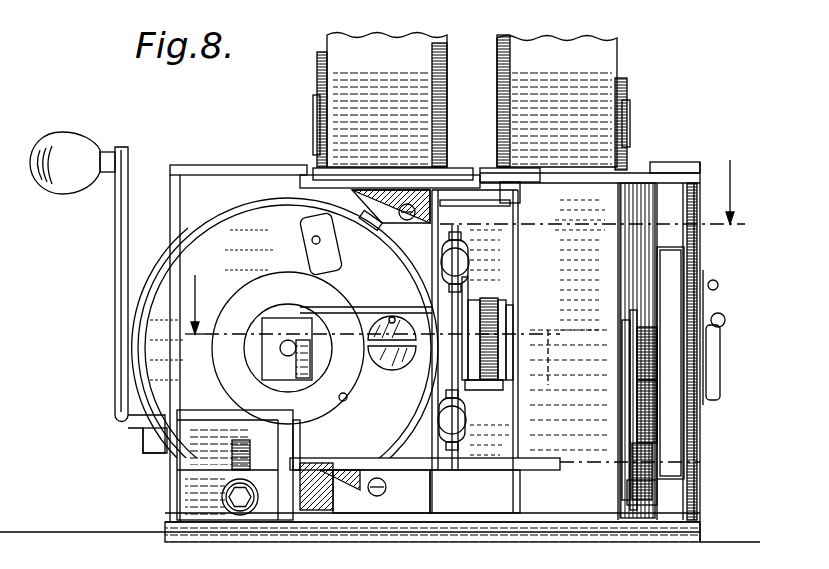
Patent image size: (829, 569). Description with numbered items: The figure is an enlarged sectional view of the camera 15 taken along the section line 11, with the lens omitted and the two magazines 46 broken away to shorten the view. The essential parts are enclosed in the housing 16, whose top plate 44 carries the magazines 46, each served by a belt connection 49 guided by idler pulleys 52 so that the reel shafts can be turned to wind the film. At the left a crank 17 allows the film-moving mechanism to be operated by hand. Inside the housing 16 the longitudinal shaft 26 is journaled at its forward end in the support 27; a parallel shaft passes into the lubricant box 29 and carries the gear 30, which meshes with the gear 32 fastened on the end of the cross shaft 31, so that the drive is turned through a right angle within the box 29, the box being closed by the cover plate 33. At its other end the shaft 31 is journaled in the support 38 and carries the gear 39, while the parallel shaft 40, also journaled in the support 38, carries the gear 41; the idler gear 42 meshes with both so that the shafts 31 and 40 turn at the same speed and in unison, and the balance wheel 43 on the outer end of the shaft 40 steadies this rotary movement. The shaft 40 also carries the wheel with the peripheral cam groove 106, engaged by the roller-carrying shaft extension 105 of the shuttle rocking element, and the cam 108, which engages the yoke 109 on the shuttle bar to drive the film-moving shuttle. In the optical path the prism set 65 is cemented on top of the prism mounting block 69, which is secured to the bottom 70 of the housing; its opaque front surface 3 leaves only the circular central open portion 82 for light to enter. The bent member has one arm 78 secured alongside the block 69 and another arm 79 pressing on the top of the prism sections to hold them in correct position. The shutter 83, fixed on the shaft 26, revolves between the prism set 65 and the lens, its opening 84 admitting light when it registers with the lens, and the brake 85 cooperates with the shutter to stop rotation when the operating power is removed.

The opaque front surface 3 is at (370, 383).
The section line 11 is at (470, 245).
The camera 15 is at (662, 134).
The housing 16 is at (167, 450).
The crank 17 is at (115, 322).
The shaft 26 is at (286, 342).
The support 27 is at (265, 362).
The box 29 is at (200, 457).
The gear 30 is at (248, 522).
The shaft 31 is at (496, 472).
The gear 32 is at (243, 441).
The cover plate 33 is at (210, 410).
The support 38 is at (638, 351).
The gear 39 is at (655, 458).
The shaft 40 is at (559, 363).
The gear 41 is at (648, 336).
The idler gear 42 is at (660, 420).
The balance wheel 43 is at (670, 363).
The top plate 44 is at (255, 168).
The magazines 46 is at (393, 40).
The belt connection 49 is at (318, 66).
The idler pulleys 52 is at (317, 130).
The prism set 65 is at (404, 384).
The prism mounting block 69 is at (292, 359).
The bottom 70 is at (378, 530).
The arm 78 is at (313, 465).
The arm 79 is at (372, 305).
The circular central open portion 82 is at (392, 318).
The shutter 83 is at (307, 243).
The opening 84 is at (312, 240).
The brake 85 is at (370, 230).
The roller-carrying shaft extension 105 is at (508, 330).
The peripheral cam groove 106 is at (506, 318).
The cam 108 is at (478, 320).
The yoke 109 is at (461, 328).